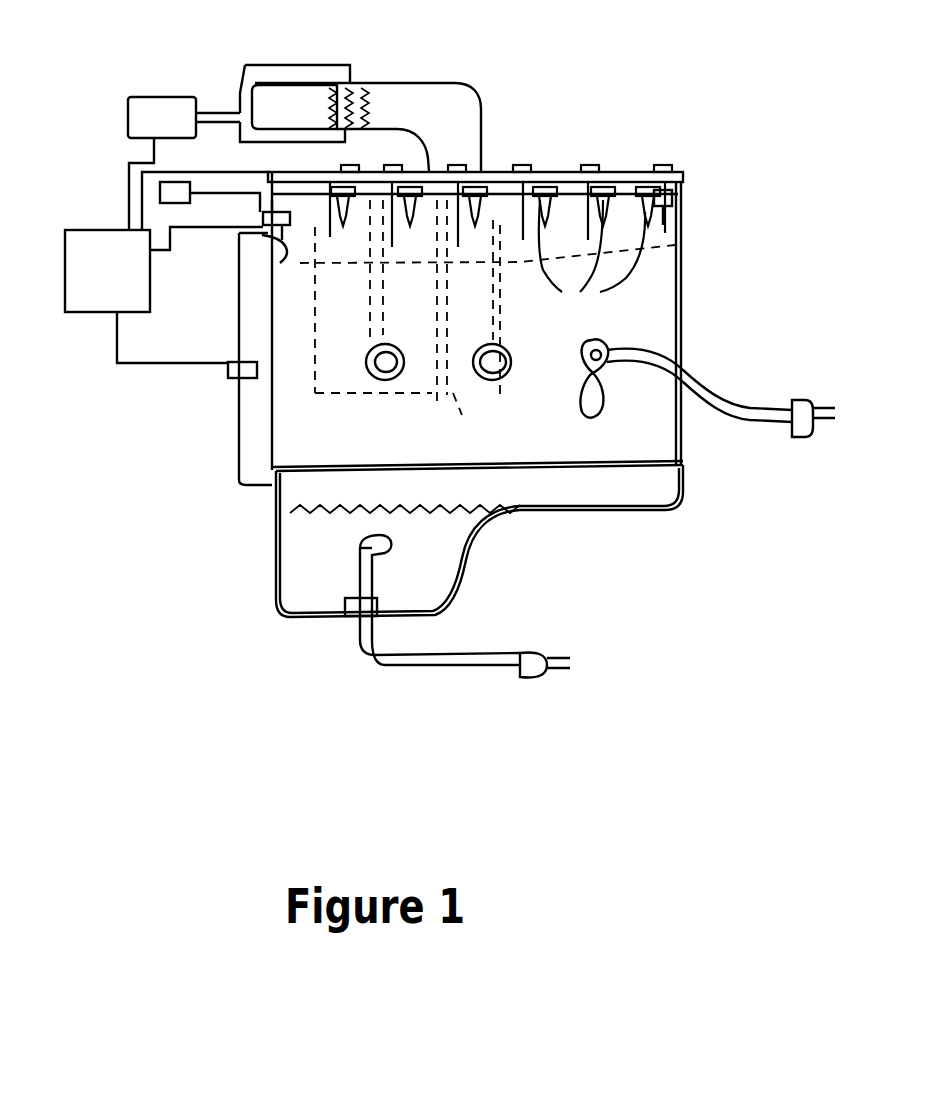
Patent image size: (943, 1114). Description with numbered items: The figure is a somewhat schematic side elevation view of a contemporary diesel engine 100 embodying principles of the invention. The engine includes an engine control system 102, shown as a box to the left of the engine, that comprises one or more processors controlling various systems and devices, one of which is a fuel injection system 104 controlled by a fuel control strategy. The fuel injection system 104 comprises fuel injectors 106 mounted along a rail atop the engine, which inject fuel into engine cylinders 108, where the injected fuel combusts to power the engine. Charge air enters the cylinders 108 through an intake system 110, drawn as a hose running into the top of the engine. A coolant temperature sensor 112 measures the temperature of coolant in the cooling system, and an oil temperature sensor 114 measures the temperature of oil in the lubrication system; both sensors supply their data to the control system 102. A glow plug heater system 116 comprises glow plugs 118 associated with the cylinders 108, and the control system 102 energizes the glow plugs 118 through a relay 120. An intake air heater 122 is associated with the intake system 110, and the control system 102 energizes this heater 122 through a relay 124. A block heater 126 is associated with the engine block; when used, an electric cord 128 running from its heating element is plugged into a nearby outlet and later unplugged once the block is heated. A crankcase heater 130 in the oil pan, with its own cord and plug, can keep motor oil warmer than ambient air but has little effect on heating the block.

The diesel engine 100 is at (707, 163).
The engine control system 102 is at (70, 313).
The fuel injection system 104 is at (344, 172).
The fuel injectors 106 is at (660, 165).
The engine cylinders 108 is at (318, 295).
The intake system 110 is at (458, 81).
The coolant temperature sensor 112 is at (285, 262).
The oil temperature sensor 114 is at (232, 380).
The glow plug heater system 116 is at (664, 213).
The glow plugs 118 is at (592, 265).
The relay 120 is at (177, 203).
The intake air heater 122 is at (375, 110).
The relay 124 is at (148, 97).
The block heater 126 is at (628, 339).
The electric cord 128 is at (755, 418).
The crankcase heater 130 is at (418, 568).